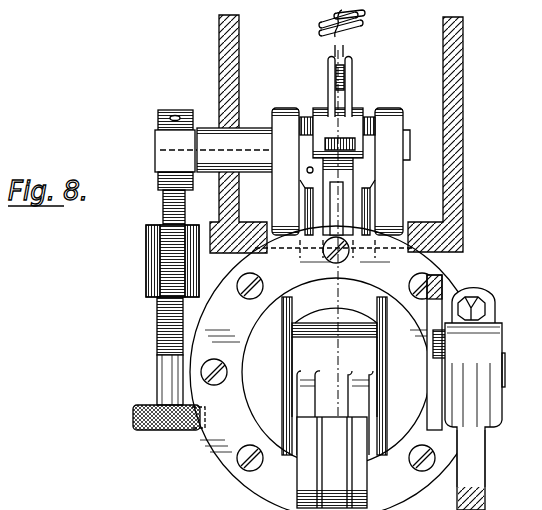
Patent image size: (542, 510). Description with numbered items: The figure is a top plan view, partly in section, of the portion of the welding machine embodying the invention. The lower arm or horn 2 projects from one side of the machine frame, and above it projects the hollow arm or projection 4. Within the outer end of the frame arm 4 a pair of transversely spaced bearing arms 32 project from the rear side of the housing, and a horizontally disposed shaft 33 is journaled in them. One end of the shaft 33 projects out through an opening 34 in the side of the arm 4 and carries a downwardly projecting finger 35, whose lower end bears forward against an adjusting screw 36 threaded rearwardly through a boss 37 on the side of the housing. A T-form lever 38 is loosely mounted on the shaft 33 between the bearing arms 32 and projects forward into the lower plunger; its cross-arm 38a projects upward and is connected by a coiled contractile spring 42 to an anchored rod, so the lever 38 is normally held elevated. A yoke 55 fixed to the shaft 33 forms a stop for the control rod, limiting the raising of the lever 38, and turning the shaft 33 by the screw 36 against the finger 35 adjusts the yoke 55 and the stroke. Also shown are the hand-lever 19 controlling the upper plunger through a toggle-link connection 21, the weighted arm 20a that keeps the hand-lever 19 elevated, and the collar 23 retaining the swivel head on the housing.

The lower arm or horn 2 is at (364, 18).
The hollow arm or projection 4 is at (463, 104).
The hand-lever 19 is at (471, 455).
The weighted arm 20a is at (441, 298).
The toggle-link connection 21 is at (303, 453).
The collar 23 is at (220, 437).
The bearing arms 32 is at (273, 203).
The shaft 33 is at (249, 143).
The opening 34 is at (219, 126).
The finger 35 is at (165, 155).
The adjusting screw 36 is at (158, 345).
The boss 37 is at (160, 275).
The lever 38 is at (338, 207).
The cross-arm 38a is at (360, 125).
The coiled contractile spring 42 is at (321, 33).
The yoke 55 is at (368, 197).